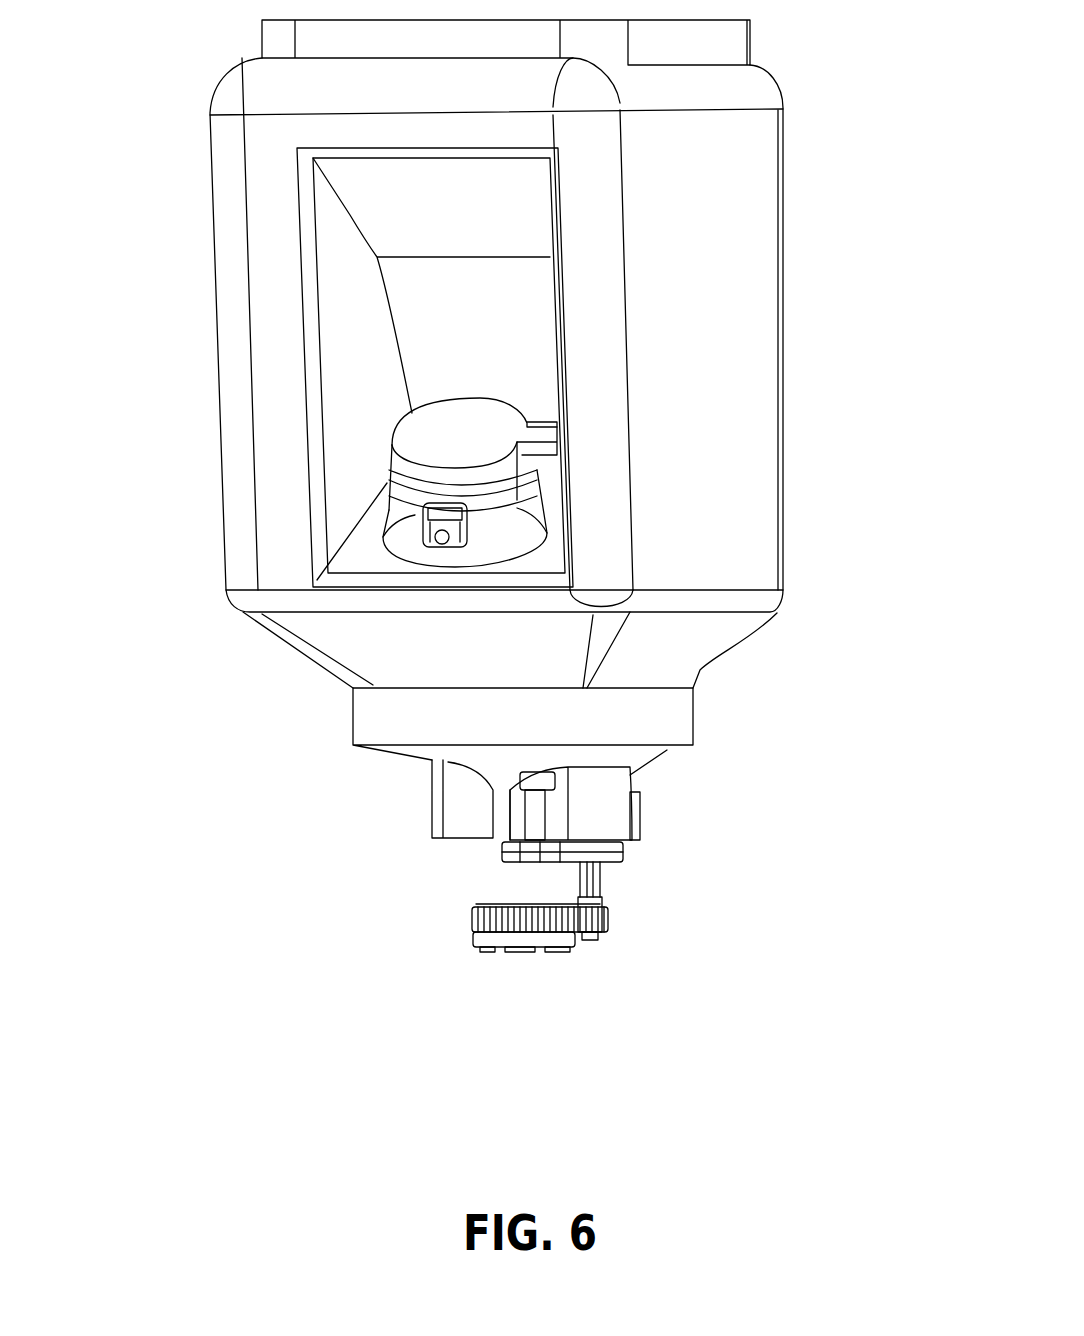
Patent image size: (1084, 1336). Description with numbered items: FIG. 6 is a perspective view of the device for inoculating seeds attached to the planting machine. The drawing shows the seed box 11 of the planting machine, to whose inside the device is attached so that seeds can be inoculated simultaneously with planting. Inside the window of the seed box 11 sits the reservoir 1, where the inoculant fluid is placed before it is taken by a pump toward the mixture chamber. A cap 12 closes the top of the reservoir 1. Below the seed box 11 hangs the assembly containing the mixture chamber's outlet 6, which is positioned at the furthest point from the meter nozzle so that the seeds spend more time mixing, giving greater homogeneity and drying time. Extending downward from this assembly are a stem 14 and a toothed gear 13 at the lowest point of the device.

The seed box 11 is at (705, 157).
The cap 12 is at (445, 437).
The reservoir 1 is at (522, 523).
The mixture chamber outlet 6 is at (437, 786).
The spout stem 14 is at (600, 882).
The gear 13 is at (457, 921).